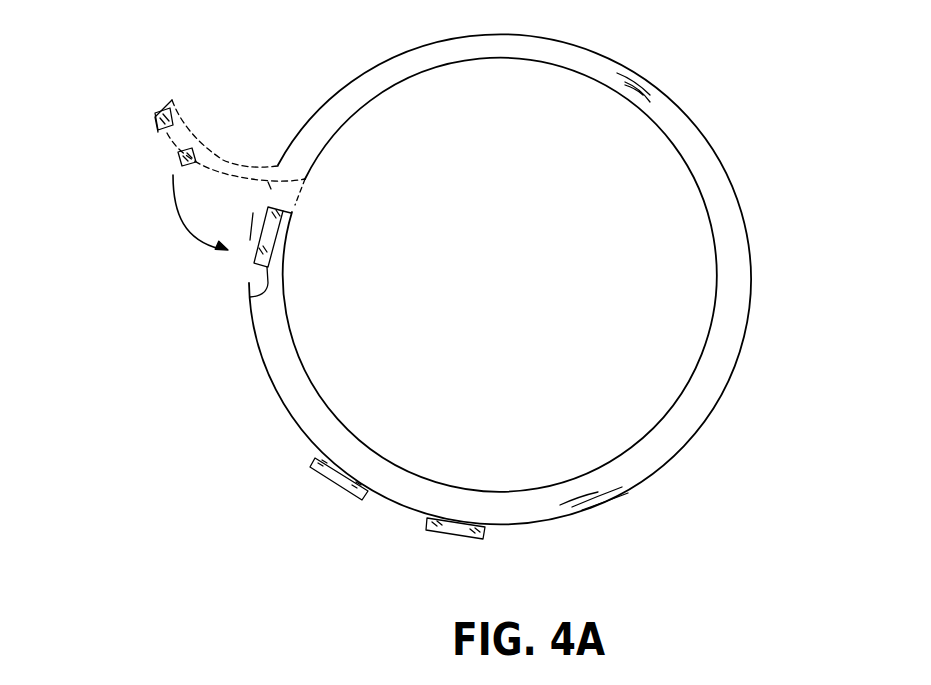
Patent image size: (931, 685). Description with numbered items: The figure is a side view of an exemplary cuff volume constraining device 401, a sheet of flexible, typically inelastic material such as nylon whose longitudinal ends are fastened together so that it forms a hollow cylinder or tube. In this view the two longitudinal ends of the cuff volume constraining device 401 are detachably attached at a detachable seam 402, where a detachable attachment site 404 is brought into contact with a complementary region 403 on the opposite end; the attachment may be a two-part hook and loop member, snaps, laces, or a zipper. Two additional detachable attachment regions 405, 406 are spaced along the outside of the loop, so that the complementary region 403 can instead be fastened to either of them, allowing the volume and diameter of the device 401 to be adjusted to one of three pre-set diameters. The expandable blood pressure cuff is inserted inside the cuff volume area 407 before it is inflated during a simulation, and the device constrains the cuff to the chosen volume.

The cuff volume constraining device 401 is at (752, 157).
The detachable seam 402 is at (146, 188).
The complementary region 403 is at (158, 132).
The detachable attachment site 404 is at (246, 265).
The detachable attachment region 405 is at (337, 489).
The detachable attachment region 406 is at (460, 537).
The cuff volume area 407 is at (557, 382).